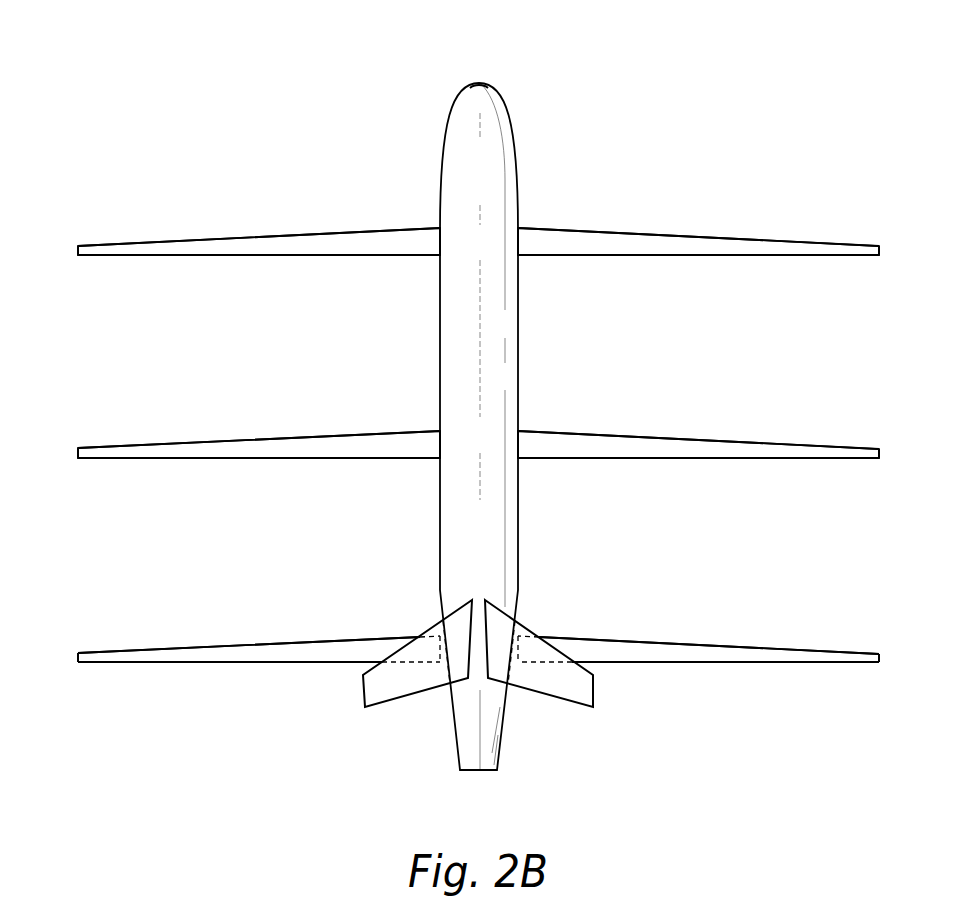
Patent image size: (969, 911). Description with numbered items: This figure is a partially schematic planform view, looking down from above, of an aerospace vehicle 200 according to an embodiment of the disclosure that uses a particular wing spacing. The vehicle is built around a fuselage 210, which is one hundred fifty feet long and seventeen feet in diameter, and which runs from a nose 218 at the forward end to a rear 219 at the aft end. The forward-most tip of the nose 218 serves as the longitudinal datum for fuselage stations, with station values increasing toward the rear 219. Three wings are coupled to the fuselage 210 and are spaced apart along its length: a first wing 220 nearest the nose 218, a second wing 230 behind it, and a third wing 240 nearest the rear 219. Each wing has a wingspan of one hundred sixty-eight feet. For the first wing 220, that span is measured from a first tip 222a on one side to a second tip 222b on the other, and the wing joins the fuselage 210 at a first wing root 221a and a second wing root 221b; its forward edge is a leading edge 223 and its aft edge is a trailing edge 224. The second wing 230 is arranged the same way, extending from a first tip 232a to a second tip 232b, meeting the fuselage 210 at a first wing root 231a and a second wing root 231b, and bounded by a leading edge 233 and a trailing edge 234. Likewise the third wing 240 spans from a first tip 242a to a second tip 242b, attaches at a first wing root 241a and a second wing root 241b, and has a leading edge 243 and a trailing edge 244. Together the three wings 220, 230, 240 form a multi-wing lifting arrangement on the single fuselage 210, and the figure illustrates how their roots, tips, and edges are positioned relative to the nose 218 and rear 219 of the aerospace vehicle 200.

The aerospace vehicle 200 is at (333, 105).
The fuselage 210 is at (447, 131).
The nose 218 is at (487, 75).
The rear 219 is at (488, 789).
The first wing 220 is at (238, 247).
The first wing root 221a is at (440, 237).
The second wing root 221b is at (518, 238).
The first tip 222a is at (78, 246).
The second tip 222b is at (882, 247).
The leading edge 223 is at (177, 240).
The trailing edge 224 is at (278, 257).
The second wing 230 is at (255, 447).
The first wing root 231a is at (440, 445).
The second wing root 231b is at (518, 447).
The first tip 232a is at (78, 450).
The second tip 232b is at (880, 452).
The leading edge 233 is at (185, 441).
The trailing edge 234 is at (290, 460).
The third wing 240 is at (282, 653).
The first wing root 241a is at (440, 647).
The second wing root 241b is at (513, 648).
The first tip 242a is at (78, 657).
The second tip 242b is at (880, 660).
The leading edge 243 is at (182, 645).
The trailing edge 244 is at (258, 663).